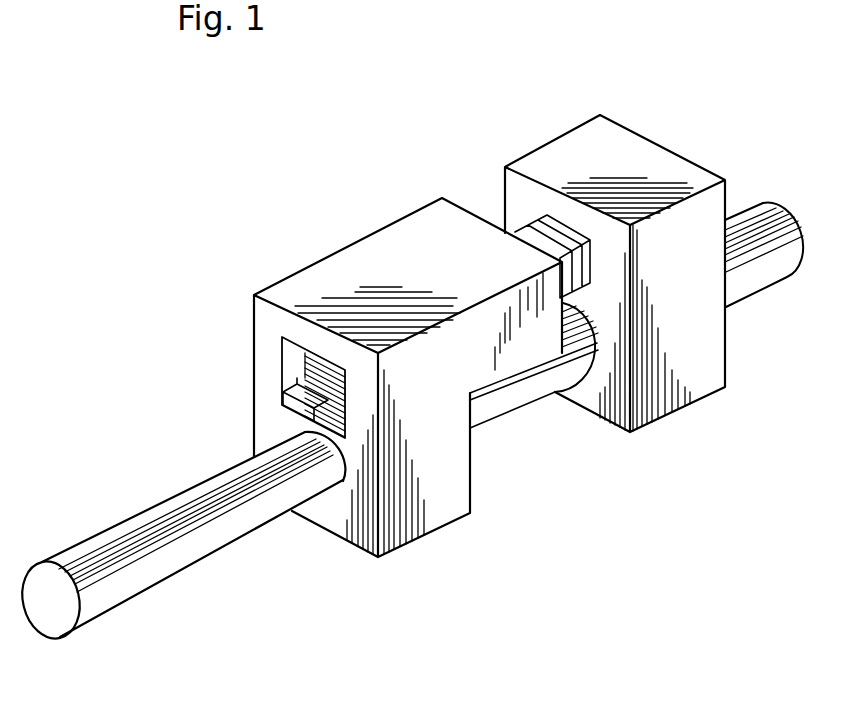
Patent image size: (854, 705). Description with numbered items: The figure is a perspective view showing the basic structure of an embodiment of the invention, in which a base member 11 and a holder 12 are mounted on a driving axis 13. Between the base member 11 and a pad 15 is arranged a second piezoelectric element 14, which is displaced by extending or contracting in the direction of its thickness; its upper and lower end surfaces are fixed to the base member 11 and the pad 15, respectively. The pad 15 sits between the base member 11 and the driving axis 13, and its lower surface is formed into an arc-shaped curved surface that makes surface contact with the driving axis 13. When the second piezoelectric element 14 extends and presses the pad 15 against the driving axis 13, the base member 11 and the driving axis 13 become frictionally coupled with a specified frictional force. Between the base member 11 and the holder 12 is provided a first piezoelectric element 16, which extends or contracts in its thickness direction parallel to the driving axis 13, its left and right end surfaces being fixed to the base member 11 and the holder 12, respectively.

The base member 11 is at (368, 249).
The holder 12 is at (642, 157).
The driving axis 13 is at (247, 535).
The second piezoelectric element 14 is at (315, 382).
The pad 15 is at (293, 400).
The first piezoelectric element 16 is at (530, 228).